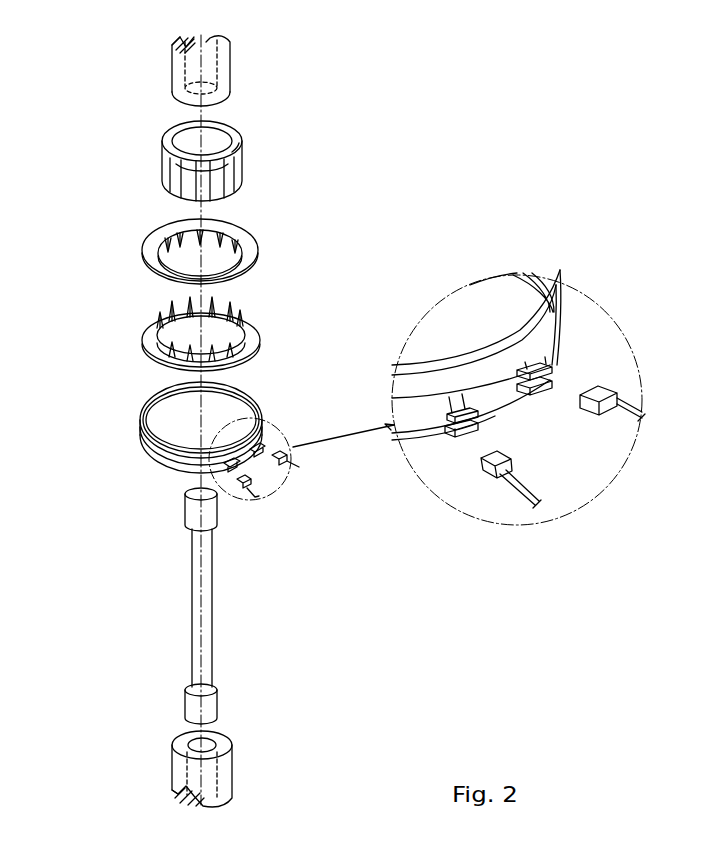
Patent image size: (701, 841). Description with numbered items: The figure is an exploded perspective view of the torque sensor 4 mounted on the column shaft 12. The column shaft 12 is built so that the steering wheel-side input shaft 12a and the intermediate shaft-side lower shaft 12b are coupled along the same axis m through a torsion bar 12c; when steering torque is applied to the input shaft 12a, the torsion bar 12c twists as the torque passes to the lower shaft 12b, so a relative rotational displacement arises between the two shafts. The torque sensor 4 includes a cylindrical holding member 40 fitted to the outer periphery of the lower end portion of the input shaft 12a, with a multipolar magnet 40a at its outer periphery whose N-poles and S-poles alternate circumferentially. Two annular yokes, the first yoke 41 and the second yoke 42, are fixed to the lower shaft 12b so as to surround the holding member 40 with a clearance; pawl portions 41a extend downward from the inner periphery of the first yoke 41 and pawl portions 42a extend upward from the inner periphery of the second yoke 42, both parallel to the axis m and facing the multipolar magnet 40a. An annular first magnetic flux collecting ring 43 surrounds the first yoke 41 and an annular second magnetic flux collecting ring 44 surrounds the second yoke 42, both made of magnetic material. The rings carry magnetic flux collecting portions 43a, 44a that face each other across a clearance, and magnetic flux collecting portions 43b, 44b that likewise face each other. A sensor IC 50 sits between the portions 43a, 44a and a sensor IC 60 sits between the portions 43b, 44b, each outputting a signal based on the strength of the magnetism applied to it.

The torque sensor 4 is at (60, 358).
The column shaft 12 is at (258, 421).
The input shaft 12a is at (232, 70).
The lower shaft 12b is at (235, 768).
The torsion bar 12c is at (213, 607).
The axis m is at (176, 132).
The holding member 40 is at (232, 128).
The multipolar magnet 40a is at (236, 155).
The first yoke 41 is at (256, 246).
The pawl portions 41a is at (233, 242).
The second yoke 42 is at (256, 326).
The pawl portions 42a is at (236, 321).
The first magnetic flux collecting ring 43 is at (157, 419).
The magnetic flux collecting portion 43a is at (556, 373).
The magnetic flux collecting portion 43b is at (470, 393).
The second magnetic flux collecting ring 44 is at (170, 464).
The magnetic flux collecting portion 44a is at (550, 380).
The magnetic flux collecting portion 44b is at (462, 447).
The sensor IC 50 is at (600, 420).
The sensor IC 60 is at (512, 458).